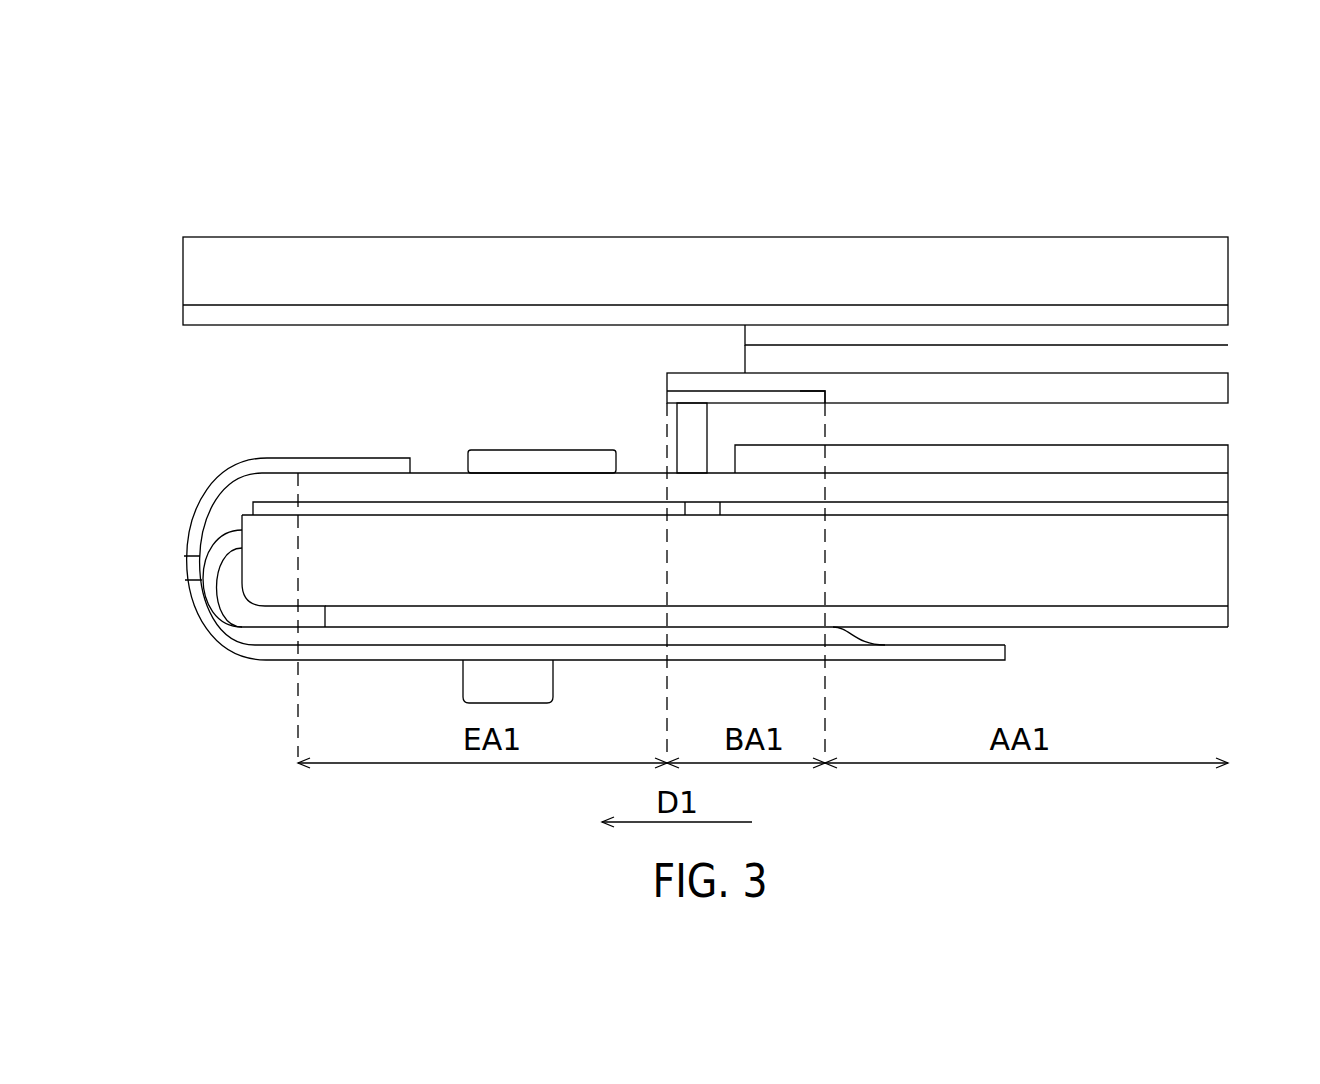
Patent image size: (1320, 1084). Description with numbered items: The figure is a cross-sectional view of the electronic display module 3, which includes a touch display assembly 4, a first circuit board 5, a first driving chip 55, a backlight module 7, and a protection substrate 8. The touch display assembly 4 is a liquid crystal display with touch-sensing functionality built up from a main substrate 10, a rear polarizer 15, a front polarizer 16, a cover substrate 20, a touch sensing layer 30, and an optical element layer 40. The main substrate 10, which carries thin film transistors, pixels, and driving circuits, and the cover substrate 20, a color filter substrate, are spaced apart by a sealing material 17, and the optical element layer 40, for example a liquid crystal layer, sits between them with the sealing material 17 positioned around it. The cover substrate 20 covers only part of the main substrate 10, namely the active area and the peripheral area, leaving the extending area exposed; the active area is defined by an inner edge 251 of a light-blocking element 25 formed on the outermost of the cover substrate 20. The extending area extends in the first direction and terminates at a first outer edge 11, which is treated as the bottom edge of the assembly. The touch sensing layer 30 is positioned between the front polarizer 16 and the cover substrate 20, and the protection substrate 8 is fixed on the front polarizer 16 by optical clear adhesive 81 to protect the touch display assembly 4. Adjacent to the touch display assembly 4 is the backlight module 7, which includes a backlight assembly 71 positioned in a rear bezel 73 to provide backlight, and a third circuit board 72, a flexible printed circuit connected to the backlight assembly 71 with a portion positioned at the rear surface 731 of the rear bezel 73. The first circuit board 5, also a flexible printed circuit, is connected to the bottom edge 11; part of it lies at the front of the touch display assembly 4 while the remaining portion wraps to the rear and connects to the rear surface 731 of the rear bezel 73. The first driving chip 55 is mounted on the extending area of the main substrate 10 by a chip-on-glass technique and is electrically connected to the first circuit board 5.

The electronic display module 3 is at (707, 405).
The touch display assembly 4 is at (747, 295).
The protection substrate 8 is at (1215, 270).
The optical clear adhesive 81 is at (1215, 312).
The front polarizer 16 is at (1215, 339).
The touch sensing layer 30 is at (1215, 365).
The cover substrate 20 is at (1215, 394).
The light-blocking element 25 is at (709, 397).
The inner edge 251 is at (825, 393).
The sealing material 17 is at (690, 438).
The first driving chip 55 is at (546, 447).
The optical element layer 40 is at (1215, 459).
The first outer edge 11 is at (298, 490).
The main substrate 10 is at (719, 541).
The first circuit board 5 is at (192, 508).
The rear polarizer 15 is at (1215, 515).
The backlight module 7 is at (707, 610).
The backlight assembly 71 is at (1215, 574).
The third circuit board 72 is at (213, 600).
The rear bezel 73 is at (1215, 619).
The rear surface 731 is at (1183, 628).